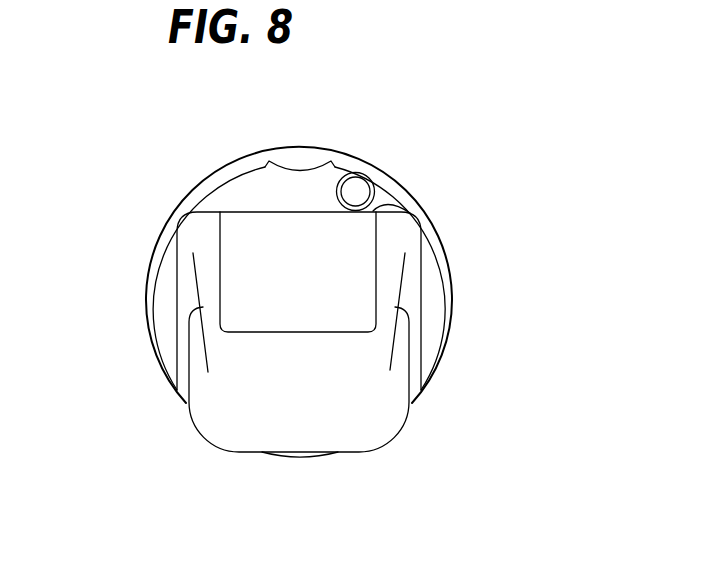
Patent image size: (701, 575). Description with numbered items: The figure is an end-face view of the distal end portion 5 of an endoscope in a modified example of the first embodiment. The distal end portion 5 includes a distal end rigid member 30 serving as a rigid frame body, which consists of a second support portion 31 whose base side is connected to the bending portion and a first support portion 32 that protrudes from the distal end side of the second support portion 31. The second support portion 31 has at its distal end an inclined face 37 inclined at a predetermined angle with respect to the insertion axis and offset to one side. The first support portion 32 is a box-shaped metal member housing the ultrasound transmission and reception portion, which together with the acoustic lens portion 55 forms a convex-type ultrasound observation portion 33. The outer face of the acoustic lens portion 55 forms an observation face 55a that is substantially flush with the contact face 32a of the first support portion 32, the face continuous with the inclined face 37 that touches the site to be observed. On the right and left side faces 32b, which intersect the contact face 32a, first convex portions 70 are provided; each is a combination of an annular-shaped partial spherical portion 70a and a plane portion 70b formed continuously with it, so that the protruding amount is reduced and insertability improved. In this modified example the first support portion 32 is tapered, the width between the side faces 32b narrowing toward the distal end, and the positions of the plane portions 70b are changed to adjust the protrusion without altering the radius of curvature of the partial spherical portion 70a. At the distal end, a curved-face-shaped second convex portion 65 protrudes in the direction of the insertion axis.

The distal end portion 5 is at (139, 159).
The inclined face 37 is at (245, 189).
The acoustic lens portion 55 is at (263, 237).
The observation face 55a is at (272, 297).
The contact face 32a is at (212, 258).
The convex-type ultrasound observation portion 33 is at (126, 310).
The side faces 32b is at (188, 306).
The plane portion 70b is at (190, 355).
The first convex portions 70 is at (178, 393).
The partial spherical portion 70a is at (198, 404).
The second convex portion 65 is at (259, 437).
The second support portion 31 is at (463, 232).
The distal end rigid member 30 is at (545, 217).
The first support portion 32 is at (463, 349).